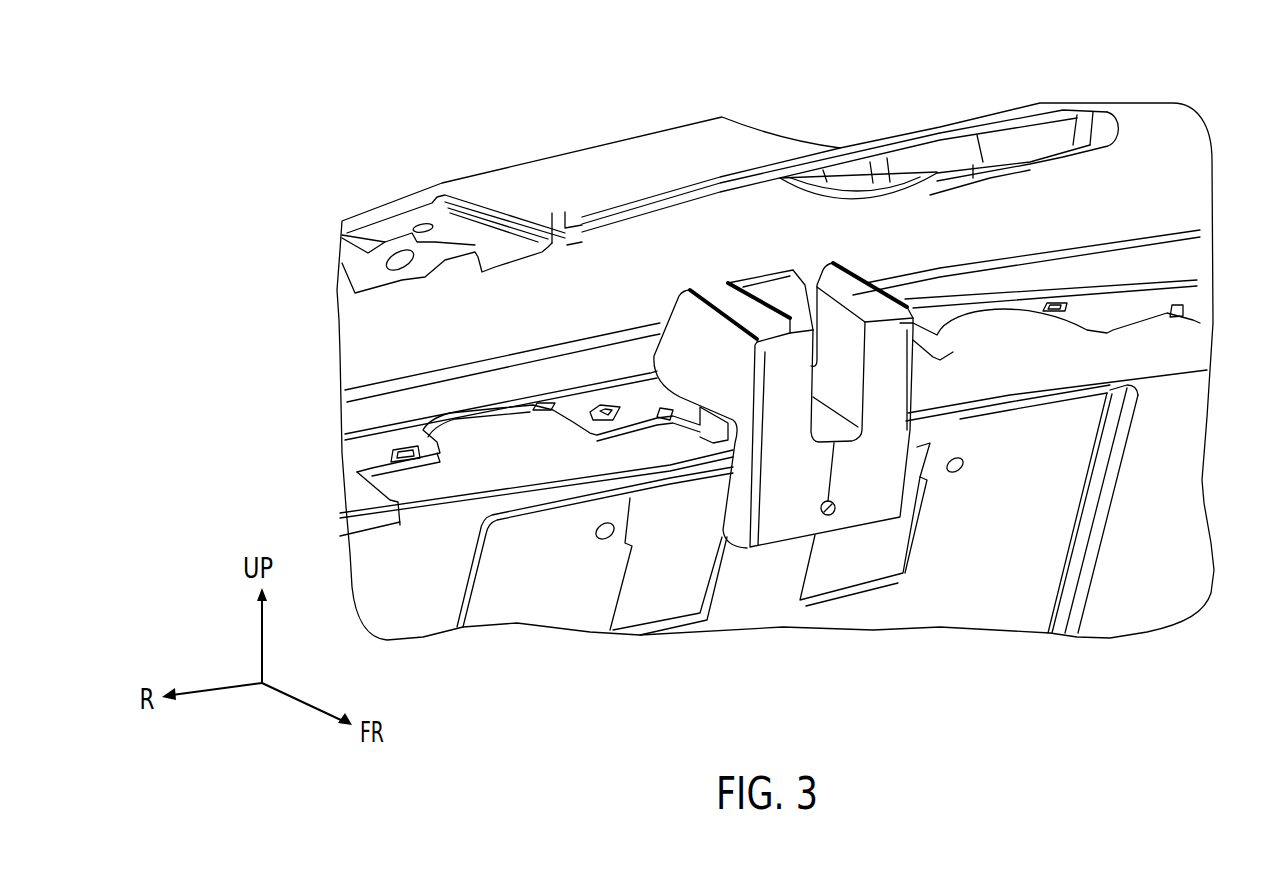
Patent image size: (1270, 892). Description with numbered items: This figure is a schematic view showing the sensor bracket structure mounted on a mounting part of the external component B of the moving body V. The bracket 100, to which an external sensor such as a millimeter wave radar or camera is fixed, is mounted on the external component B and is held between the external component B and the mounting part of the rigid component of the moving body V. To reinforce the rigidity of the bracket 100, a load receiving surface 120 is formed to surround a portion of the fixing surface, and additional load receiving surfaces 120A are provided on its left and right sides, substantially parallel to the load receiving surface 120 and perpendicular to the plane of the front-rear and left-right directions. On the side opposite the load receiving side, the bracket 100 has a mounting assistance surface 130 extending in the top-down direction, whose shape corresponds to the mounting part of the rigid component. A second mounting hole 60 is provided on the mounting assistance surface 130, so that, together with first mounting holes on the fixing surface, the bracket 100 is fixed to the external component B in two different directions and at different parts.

The bracket 100 is at (767, 372).
The load receiving surface 120 is at (735, 302).
The load receiving surface 120A is at (693, 317).
The mounting assistance surface 130 is at (882, 507).
The second mounting hole 60 is at (831, 514).
The external component B is at (773, 205).
The moving body V is at (1170, 457).